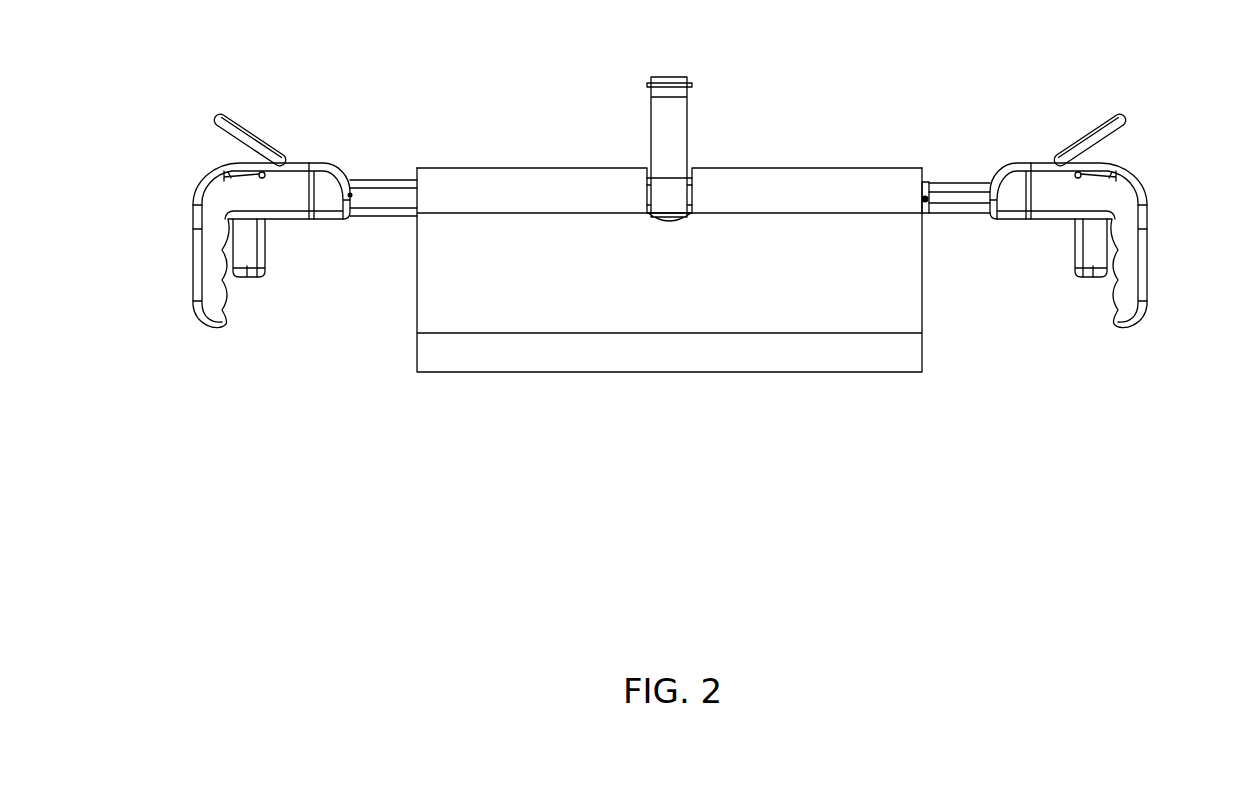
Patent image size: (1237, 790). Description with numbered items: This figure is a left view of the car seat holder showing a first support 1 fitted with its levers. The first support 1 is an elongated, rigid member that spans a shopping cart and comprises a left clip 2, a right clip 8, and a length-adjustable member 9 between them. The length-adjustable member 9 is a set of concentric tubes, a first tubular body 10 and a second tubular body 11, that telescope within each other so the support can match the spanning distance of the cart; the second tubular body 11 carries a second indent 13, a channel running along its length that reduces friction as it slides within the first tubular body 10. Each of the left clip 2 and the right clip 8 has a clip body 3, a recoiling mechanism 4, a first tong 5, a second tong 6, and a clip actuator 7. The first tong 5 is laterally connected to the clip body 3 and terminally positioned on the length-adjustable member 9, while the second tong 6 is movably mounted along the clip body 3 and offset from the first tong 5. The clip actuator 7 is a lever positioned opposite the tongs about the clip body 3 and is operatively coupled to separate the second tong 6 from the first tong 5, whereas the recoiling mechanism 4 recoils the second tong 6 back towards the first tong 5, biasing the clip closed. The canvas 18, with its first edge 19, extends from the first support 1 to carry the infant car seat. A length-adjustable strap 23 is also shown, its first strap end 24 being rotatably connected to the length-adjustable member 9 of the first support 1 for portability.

The first support 1 is at (196, 93).
The left clip 2 is at (170, 266).
The clip body 3 is at (212, 203).
The recoiling mechanism 4 is at (243, 167).
The first tong 5 is at (210, 302).
The second tong 6 is at (247, 270).
The clip actuator 7 is at (250, 140).
The right clip 8 is at (1170, 266).
The length-adjustable member 9 is at (416, 153).
The first tubular body 10 is at (402, 200).
The second tubular body 11 is at (938, 187).
The second indent 13 is at (950, 195).
The canvas 18 is at (685, 287).
The first edge 19 is at (843, 183).
The length-adjustable strap 23 is at (678, 151).
The first strap end 24 is at (645, 120).